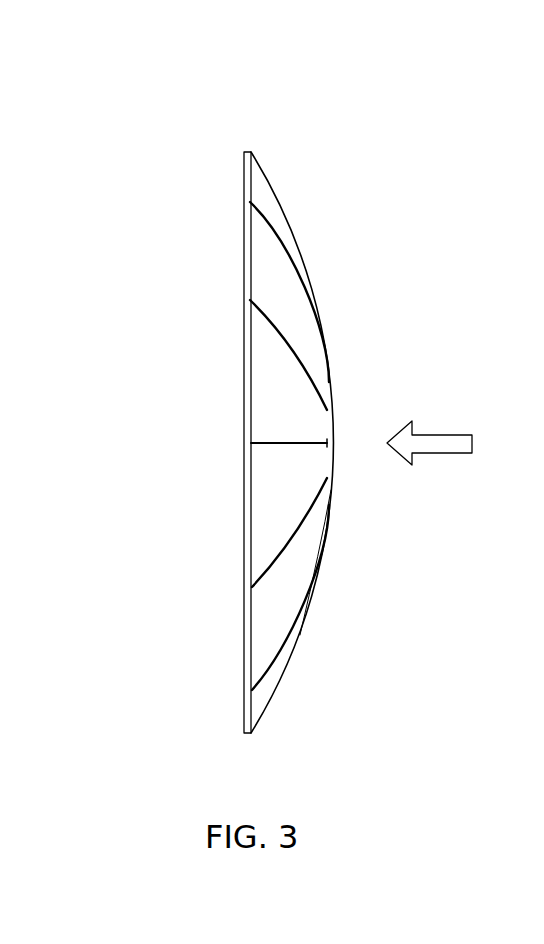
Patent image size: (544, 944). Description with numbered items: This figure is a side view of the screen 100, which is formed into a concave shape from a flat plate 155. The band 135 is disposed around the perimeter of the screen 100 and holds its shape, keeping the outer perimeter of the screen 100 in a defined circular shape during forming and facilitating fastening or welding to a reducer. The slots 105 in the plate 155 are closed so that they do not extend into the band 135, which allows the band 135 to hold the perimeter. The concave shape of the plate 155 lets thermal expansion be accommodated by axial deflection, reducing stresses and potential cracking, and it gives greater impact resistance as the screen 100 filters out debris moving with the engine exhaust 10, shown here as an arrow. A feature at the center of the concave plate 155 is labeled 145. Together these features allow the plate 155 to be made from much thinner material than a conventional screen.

The screen 100 is at (328, 672).
The band 135 is at (251, 237).
The plate 155 is at (277, 395).
The apex region 145 is at (332, 421).
The slots 105 is at (288, 445).
The engine exhaust 10 is at (452, 453).